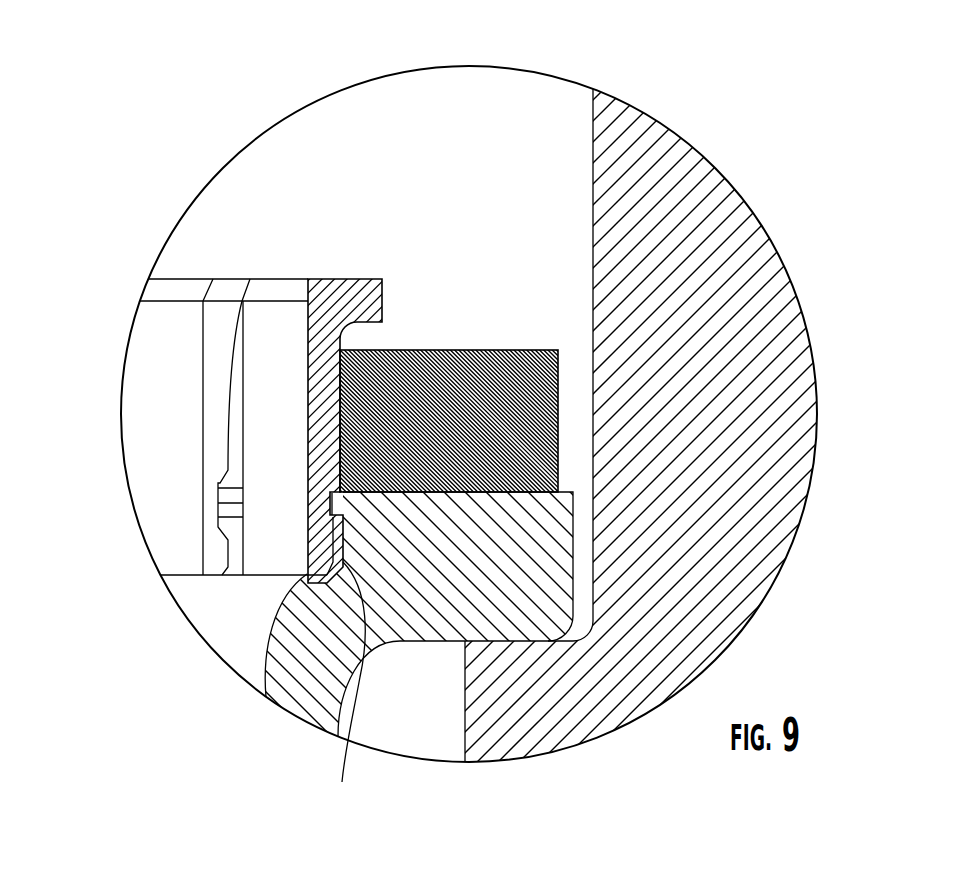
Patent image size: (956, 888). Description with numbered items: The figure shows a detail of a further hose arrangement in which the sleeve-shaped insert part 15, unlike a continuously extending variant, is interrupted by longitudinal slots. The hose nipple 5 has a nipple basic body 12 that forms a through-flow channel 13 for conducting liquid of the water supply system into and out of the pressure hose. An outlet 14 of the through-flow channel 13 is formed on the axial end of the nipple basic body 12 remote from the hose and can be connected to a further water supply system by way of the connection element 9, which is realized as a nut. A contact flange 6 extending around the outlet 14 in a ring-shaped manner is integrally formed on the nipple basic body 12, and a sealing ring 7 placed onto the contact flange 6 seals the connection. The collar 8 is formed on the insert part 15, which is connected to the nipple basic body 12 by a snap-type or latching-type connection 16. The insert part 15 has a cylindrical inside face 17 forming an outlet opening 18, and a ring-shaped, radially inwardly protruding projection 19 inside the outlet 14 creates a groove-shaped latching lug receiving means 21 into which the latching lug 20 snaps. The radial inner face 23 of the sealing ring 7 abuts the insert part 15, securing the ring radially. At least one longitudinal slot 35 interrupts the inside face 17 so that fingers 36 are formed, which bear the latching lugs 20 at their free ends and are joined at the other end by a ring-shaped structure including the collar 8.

The hose nipple 5 is at (400, 708).
The contact flange 6 is at (533, 545).
The sealing ring 7 is at (489, 350).
The collar 8 is at (372, 292).
The connection element 9 is at (713, 178).
The nipple basic body 12 is at (303, 690).
The through-flow channel 13 is at (218, 645).
The outlet 14 is at (175, 470).
The insert part 15 is at (172, 335).
The snap-type or latching-type connection 16 is at (376, 521).
The inside face 17 is at (281, 370).
The outlet opening 18 is at (183, 312).
The projection 19 is at (372, 503).
The latching lug 20 is at (213, 560).
The latching lug receiving means 21 is at (343, 687).
The radial inner face 23 is at (320, 418).
The longitudinal slot 35 is at (215, 476).
The finger 36 is at (187, 575).